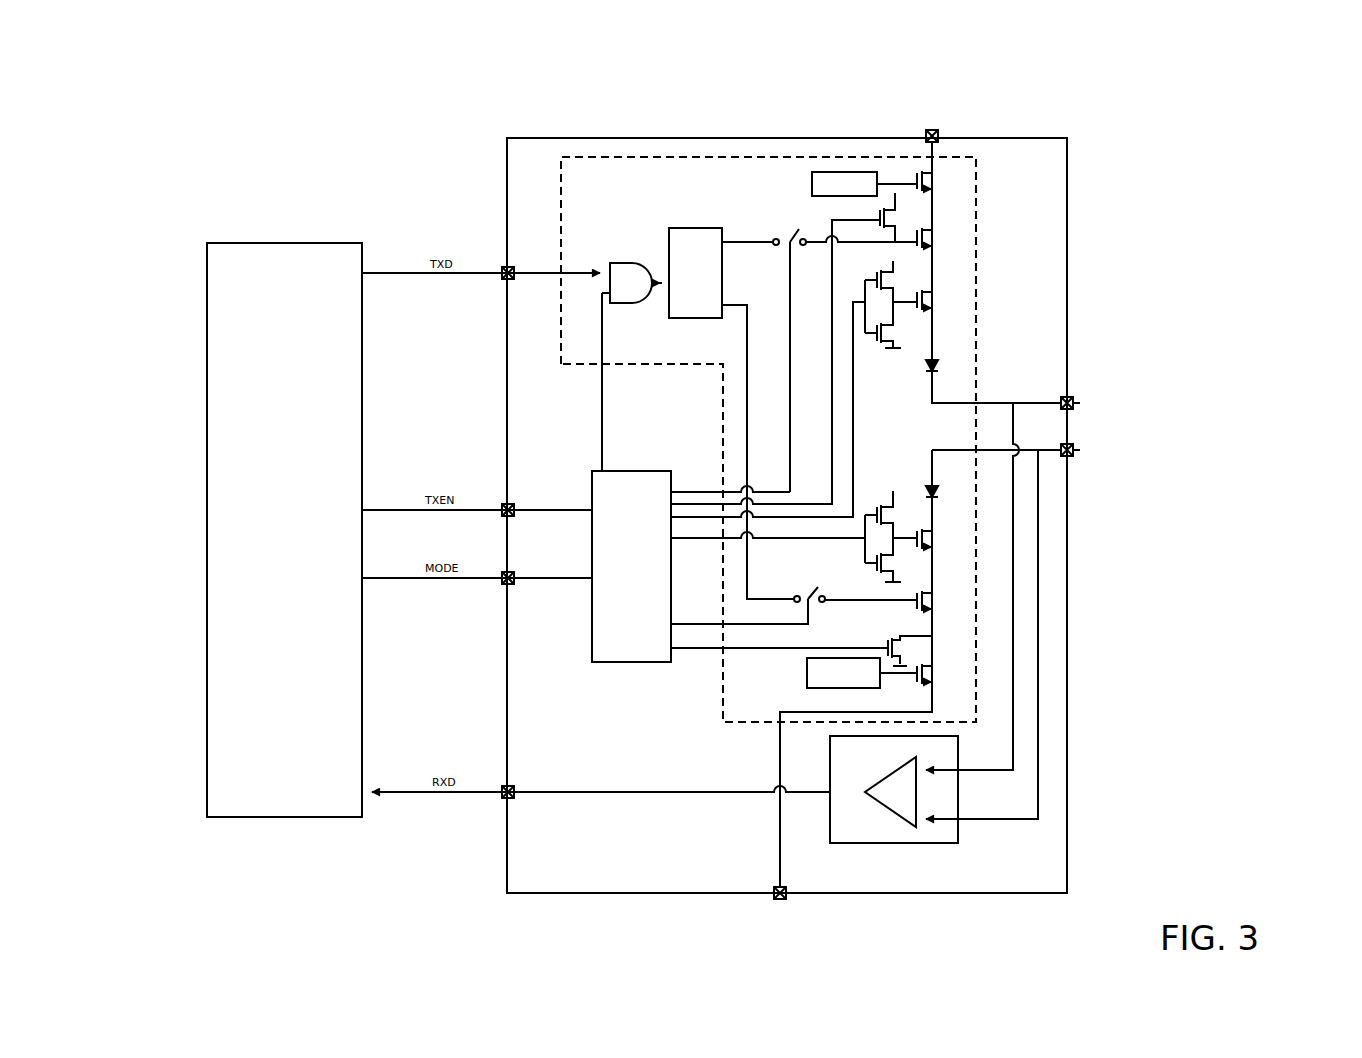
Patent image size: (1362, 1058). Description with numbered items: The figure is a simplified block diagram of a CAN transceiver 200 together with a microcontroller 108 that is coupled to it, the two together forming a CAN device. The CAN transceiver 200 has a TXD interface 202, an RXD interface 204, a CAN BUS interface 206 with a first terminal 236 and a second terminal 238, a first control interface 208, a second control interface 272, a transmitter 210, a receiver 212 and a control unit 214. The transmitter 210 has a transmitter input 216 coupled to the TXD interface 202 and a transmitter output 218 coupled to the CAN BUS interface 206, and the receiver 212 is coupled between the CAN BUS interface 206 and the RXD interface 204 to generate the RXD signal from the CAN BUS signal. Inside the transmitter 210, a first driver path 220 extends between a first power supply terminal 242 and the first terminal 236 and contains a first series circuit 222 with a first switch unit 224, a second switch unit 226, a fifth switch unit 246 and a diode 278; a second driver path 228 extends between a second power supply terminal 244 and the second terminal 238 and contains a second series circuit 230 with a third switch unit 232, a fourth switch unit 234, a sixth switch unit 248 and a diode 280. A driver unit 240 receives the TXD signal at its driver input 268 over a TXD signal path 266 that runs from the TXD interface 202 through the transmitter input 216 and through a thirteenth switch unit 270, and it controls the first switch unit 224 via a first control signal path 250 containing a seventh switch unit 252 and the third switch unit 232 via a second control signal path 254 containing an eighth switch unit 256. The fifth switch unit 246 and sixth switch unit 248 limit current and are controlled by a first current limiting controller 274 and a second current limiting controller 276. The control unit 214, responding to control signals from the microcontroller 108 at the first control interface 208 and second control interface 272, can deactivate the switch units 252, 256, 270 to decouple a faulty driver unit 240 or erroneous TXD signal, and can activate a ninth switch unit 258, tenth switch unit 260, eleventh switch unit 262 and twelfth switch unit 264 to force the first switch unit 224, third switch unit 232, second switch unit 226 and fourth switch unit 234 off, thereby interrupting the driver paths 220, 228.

The microcontroller 108 is at (205, 237).
The CAN transceiver 200 is at (1063, 133).
The TXD interface 202 is at (500, 265).
The RXD interface 204 is at (498, 812).
The CAN BUS interface 206 is at (1097, 428).
The first control interface 208 is at (497, 502).
The transmitter 210 is at (972, 155).
The receiver 212 is at (960, 838).
The control unit 214 is at (585, 625).
The transmitter input 216 is at (548, 283).
The transmitter output 218 is at (990, 393).
The first driver path 220 is at (940, 333).
The first series circuit 222 is at (940, 278).
The first switch unit 224 is at (940, 239).
The second switch unit 226 is at (940, 302).
The second driver path 228 is at (942, 513).
The second series circuit 230 is at (942, 583).
The third switch unit 232 is at (942, 603).
The fourth switch unit 234 is at (942, 540).
The first terminal 236 is at (1082, 398).
The second terminal 238 is at (1082, 450).
The driver unit 240 is at (667, 223).
The first power supply terminal 242 is at (920, 127).
The second power supply terminal 244 is at (797, 900).
The fifth switch unit 246 is at (940, 180).
The sixth switch unit 248 is at (942, 677).
The first control signal path 250 is at (735, 233).
The seventh switch unit 252 is at (787, 222).
The second control signal path 254 is at (740, 430).
The eighth switch unit 256 is at (785, 607).
The ninth switch unit 258 is at (908, 218).
The tenth switch unit 260 is at (913, 648).
The eleventh switch unit 262 is at (905, 273).
The twelfth switch unit 264 is at (905, 562).
The TXD signal path 266 is at (570, 268).
The driver input 268 is at (657, 262).
The thirteenth switch unit 270 is at (618, 261).
The second control interface 272 is at (497, 590).
The first current limiting controller 274 is at (805, 168).
The second current limiting controller 276 is at (810, 700).
The diode 278 is at (942, 365).
The diode 280 is at (942, 492).